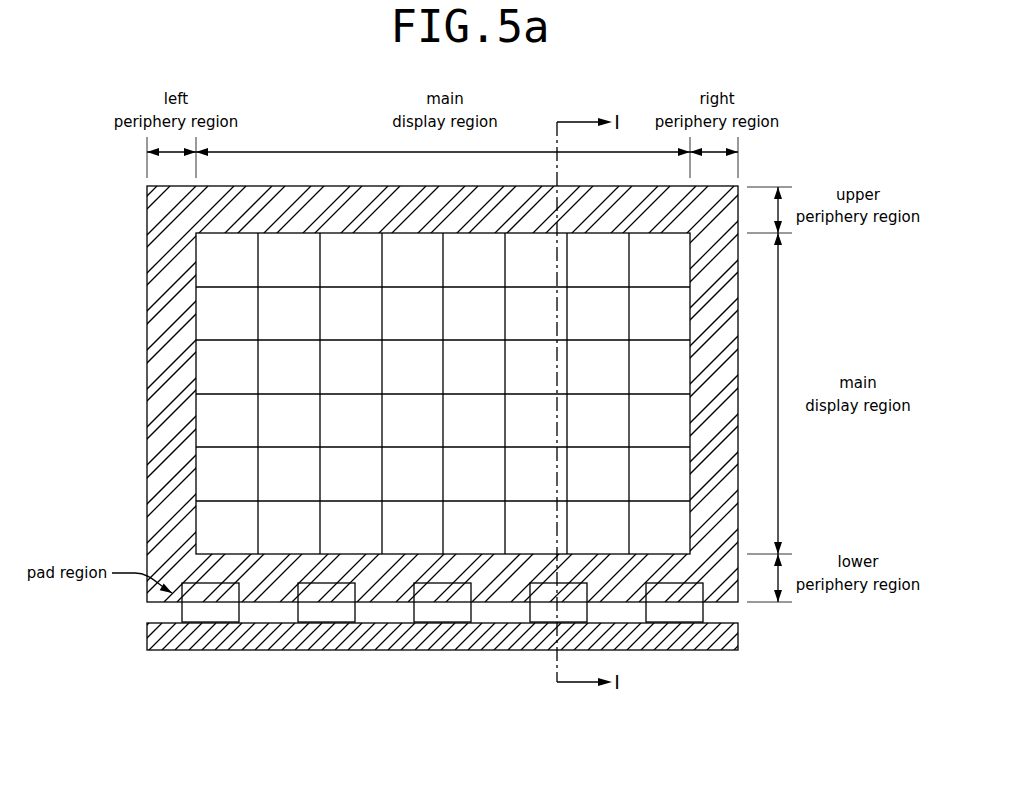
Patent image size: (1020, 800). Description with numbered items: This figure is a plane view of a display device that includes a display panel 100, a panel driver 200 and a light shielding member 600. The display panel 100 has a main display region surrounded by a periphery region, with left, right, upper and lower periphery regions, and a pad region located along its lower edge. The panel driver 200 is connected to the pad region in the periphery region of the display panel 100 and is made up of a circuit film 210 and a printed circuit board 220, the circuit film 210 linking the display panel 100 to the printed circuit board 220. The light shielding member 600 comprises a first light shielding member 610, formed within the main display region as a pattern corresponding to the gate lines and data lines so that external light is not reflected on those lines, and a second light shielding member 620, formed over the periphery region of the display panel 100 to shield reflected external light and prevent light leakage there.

The display panel 100 is at (147, 270).
The light shielding member 600 is at (510, 394).
The first light shielding member 610 is at (215, 340).
The second light shielding member 620 is at (170, 372).
The panel driver 200 is at (441, 663).
The circuit film 210 is at (675, 614).
The printed circuit board 220 is at (715, 707).